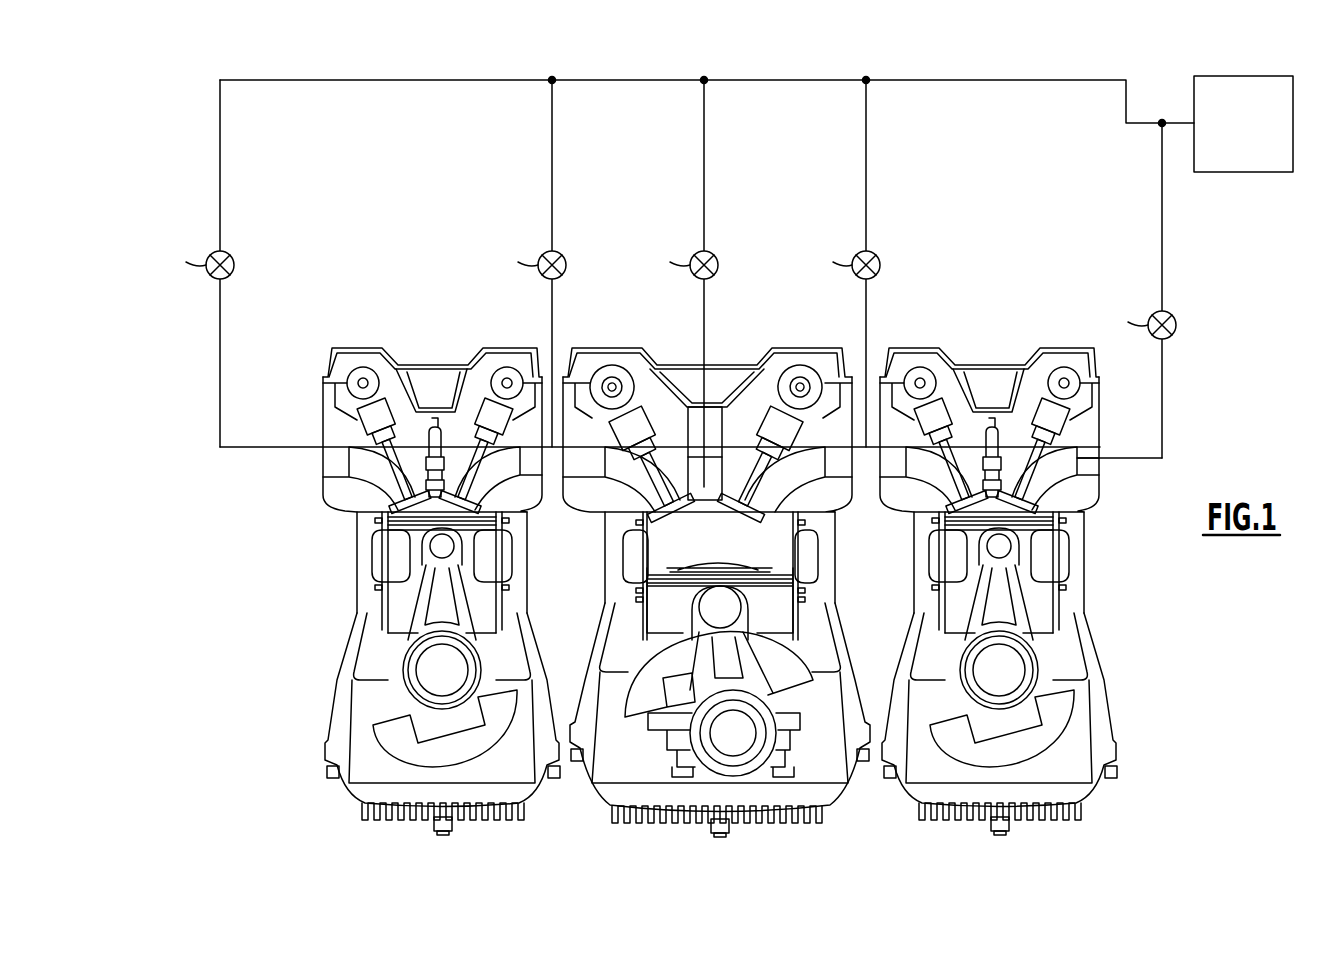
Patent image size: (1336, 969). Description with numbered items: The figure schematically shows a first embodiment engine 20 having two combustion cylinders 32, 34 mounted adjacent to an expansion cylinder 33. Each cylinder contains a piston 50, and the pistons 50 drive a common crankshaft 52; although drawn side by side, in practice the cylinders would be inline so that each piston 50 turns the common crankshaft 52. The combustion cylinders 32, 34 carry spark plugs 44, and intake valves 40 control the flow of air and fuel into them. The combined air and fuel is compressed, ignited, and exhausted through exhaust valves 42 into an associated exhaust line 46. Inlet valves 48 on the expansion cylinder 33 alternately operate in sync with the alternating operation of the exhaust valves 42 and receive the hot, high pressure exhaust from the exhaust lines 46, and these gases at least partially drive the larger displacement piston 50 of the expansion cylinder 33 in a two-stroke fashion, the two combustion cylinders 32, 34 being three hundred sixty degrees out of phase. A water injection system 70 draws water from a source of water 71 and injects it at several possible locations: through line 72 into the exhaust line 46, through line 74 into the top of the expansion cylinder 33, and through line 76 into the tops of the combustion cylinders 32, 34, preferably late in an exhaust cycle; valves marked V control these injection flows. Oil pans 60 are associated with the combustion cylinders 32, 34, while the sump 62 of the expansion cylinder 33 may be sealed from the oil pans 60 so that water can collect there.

The engine 20 is at (1040, 200).
The combustion cylinder 32 is at (310, 378).
The expansion cylinder 33 is at (749, 300).
The combustion cylinder 34 is at (1034, 328).
The intake valve 40 is at (410, 530).
The exhaust valve 42 is at (478, 548).
The spark plug 44 is at (435, 420).
The exhaust line 46 is at (588, 463).
The inlet valve 48 is at (753, 507).
The piston 50 is at (397, 542).
The common crankshaft 52 is at (425, 667).
The oil pan 60 is at (387, 790).
The sump 62 is at (787, 797).
The water injection system 70 is at (782, 78).
The source of water 71 is at (1228, 158).
The line 72 is at (552, 148).
The line 74 is at (705, 150).
The line 76 is at (220, 173).